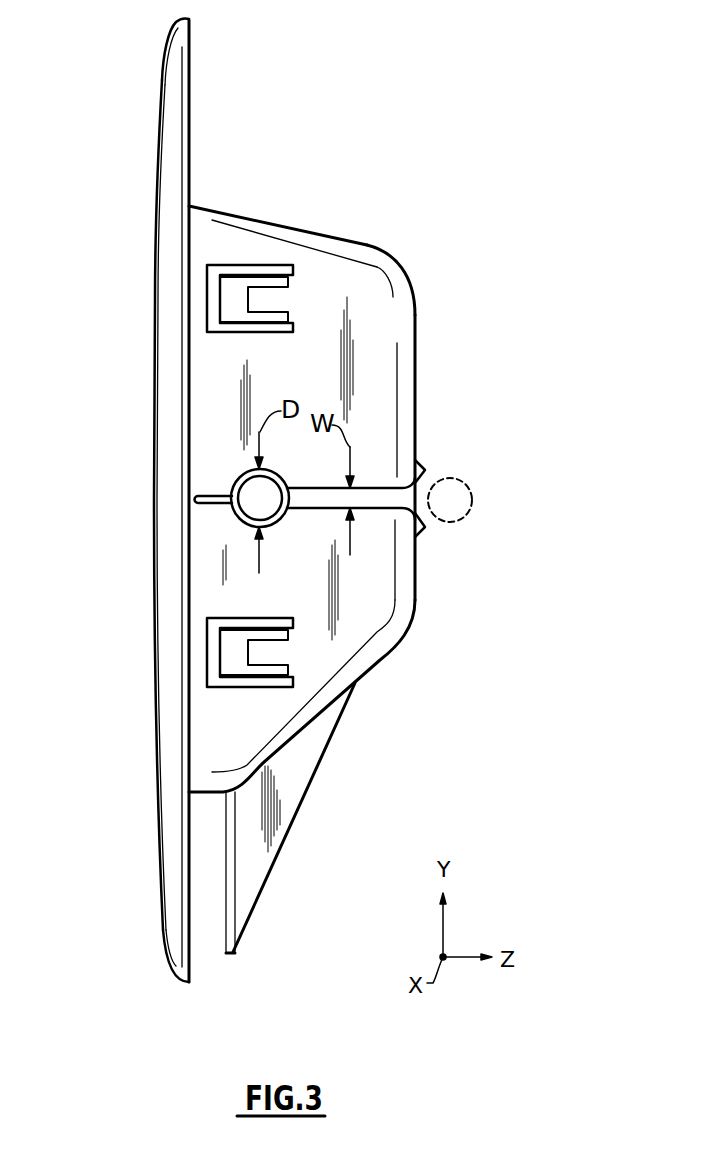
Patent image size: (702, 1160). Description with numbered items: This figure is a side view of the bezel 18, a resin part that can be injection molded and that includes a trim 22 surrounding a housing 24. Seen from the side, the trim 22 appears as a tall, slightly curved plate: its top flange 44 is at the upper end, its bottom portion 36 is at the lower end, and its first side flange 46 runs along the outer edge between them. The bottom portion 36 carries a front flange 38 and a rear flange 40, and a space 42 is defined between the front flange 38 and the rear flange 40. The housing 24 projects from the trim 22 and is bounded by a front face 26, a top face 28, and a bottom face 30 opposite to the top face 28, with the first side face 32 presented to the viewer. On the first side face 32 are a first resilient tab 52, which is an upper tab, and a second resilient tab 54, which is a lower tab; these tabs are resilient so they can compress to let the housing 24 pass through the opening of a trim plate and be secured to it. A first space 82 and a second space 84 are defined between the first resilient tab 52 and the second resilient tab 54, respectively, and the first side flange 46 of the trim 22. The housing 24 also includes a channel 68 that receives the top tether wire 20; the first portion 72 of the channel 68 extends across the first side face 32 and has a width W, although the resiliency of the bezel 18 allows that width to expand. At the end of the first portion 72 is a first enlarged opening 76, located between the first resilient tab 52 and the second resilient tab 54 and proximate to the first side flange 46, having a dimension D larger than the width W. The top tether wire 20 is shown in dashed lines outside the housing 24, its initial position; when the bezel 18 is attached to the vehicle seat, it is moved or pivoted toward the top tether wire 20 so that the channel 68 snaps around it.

The bezel 18 is at (541, 43).
The top tether wire 20 is at (265, 470).
The trim 22 is at (173, 157).
The housing 24 is at (342, 282).
The front face 26 is at (415, 377).
The top face 28 is at (293, 220).
The bottom face 30 is at (373, 665).
The first side face 32 is at (357, 337).
The bottom portion 36 is at (80, 1016).
The front flange 38 is at (250, 877).
The rear flange 40 is at (172, 867).
The space 42 is at (205, 927).
The top flange 44 is at (162, 80).
The first side flange 46 is at (168, 382).
The first resilient tab 52 is at (215, 302).
The second resilient tab 54 is at (227, 652).
The channel 68 is at (372, 495).
The first portion 72 is at (360, 498).
The first enlarged opening 76 is at (282, 520).
The first space 82 is at (202, 270).
The second space 84 is at (205, 665).